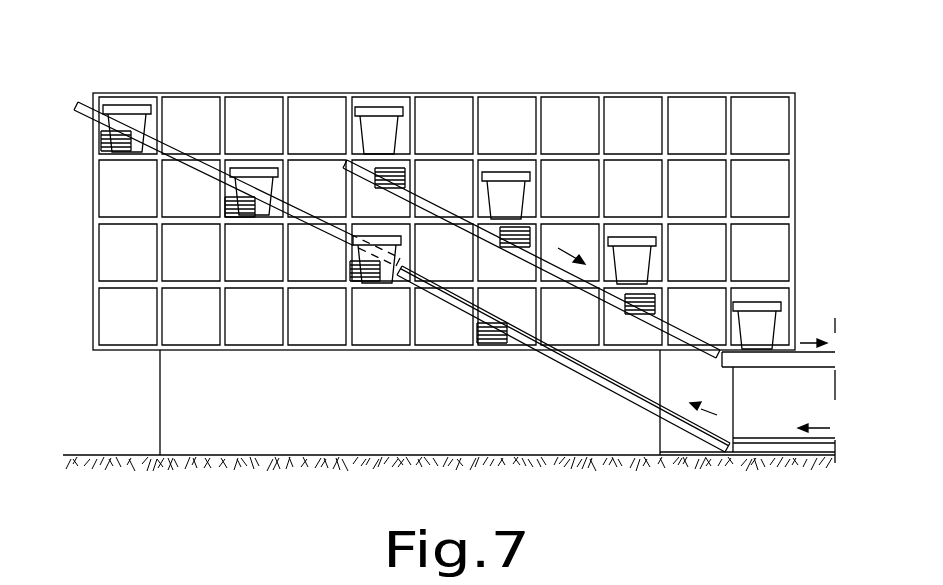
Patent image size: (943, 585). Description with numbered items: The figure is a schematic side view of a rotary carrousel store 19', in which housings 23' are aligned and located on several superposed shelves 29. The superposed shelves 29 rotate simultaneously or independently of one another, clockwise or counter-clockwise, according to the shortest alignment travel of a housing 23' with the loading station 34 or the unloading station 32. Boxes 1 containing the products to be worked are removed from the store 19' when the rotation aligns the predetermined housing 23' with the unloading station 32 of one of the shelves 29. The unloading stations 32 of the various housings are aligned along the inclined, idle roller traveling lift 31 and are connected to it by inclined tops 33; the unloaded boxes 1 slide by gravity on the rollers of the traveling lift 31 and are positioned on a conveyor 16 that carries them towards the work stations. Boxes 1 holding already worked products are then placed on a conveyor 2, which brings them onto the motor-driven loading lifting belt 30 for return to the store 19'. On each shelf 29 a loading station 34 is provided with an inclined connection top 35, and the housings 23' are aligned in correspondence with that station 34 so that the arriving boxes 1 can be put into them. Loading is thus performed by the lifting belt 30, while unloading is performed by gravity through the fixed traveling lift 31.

The box 1 is at (283, 195).
The conveyor 2 is at (776, 440).
The conveyor 16 is at (800, 358).
The store 19' is at (452, 238).
The housing 23' is at (665, 129).
The superposed shelf 29 is at (117, 315).
The lifting belt 30 is at (603, 372).
The traveling lift 31 is at (567, 280).
The unloading station 32 is at (405, 142).
The inclined top 33 is at (403, 170).
The loading station 34 is at (294, 192).
The inclined connection top 35 is at (246, 222).